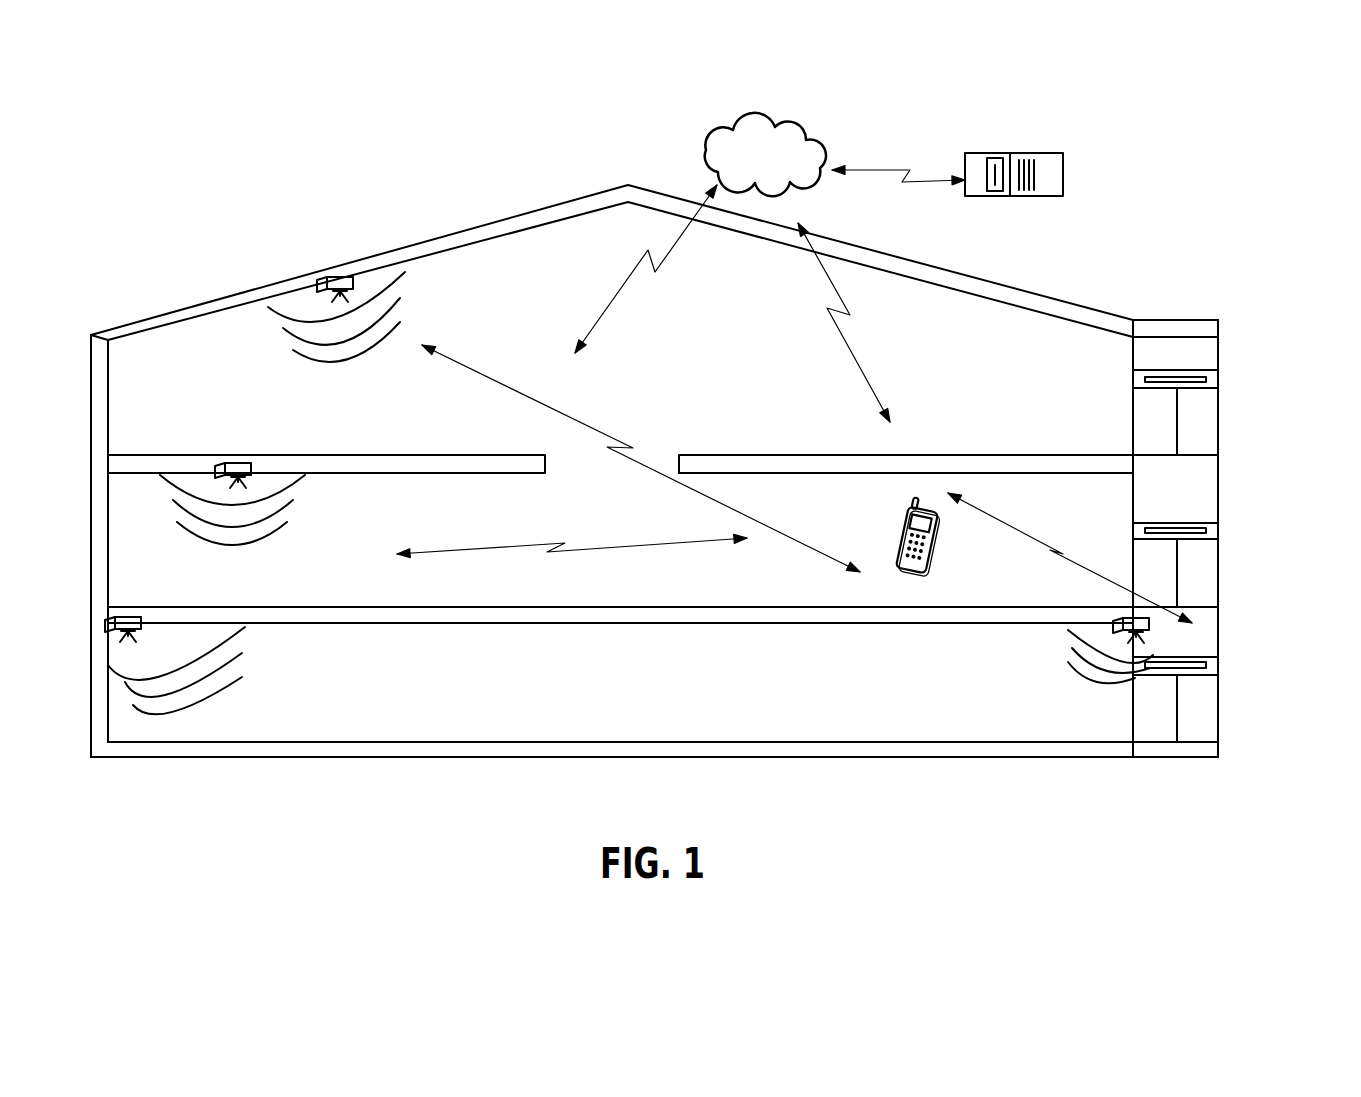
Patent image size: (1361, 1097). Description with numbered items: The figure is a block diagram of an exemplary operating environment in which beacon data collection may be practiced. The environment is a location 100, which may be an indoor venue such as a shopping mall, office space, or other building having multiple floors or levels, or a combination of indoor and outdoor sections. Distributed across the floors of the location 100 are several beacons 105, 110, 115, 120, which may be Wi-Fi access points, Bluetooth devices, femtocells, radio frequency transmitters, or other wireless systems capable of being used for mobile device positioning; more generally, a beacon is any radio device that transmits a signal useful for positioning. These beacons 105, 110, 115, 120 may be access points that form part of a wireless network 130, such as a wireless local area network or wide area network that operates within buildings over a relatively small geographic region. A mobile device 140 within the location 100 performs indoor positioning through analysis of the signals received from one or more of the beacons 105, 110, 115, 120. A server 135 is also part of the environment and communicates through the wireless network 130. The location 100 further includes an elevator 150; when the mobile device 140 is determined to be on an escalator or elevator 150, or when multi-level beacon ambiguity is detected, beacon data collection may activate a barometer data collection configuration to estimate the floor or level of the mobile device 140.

The location 100 is at (207, 65).
The beacon 105 is at (347, 253).
The beacon 110 is at (242, 448).
The beacon 115 is at (228, 650).
The beacon 120 is at (1037, 653).
The wireless network 130 is at (747, 122).
The server 135 is at (1012, 153).
The mobile device 140 is at (892, 558).
The elevator 150 is at (1218, 357).